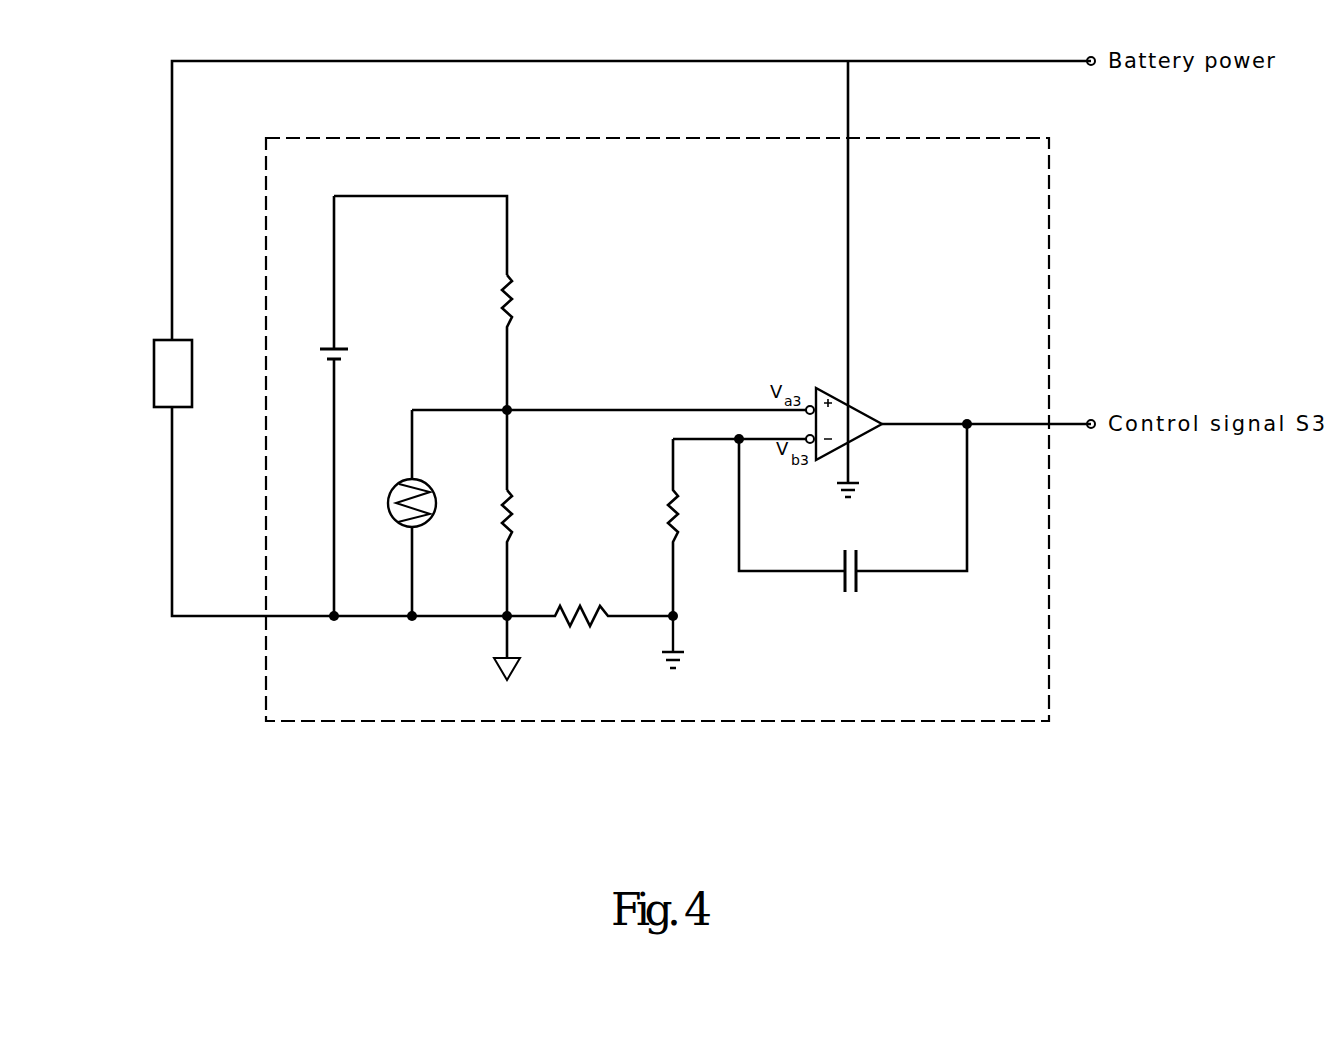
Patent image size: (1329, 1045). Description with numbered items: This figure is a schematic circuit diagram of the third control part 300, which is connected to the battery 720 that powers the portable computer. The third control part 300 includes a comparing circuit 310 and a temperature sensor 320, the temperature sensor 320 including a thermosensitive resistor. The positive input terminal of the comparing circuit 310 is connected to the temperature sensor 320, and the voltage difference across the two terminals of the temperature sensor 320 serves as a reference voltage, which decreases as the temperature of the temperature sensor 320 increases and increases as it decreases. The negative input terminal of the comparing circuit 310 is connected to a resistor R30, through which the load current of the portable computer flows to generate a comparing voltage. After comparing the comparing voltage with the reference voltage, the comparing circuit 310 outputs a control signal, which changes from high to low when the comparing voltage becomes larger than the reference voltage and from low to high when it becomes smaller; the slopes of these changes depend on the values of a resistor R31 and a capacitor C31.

The third control part 300 is at (1049, 195).
The comparing circuit 310 is at (858, 424).
The temperature sensor 320 is at (387, 501).
The battery 720 is at (154, 372).
The resistor R30 is at (590, 597).
The resistor R31 is at (652, 527).
The capacitor C31 is at (853, 508).